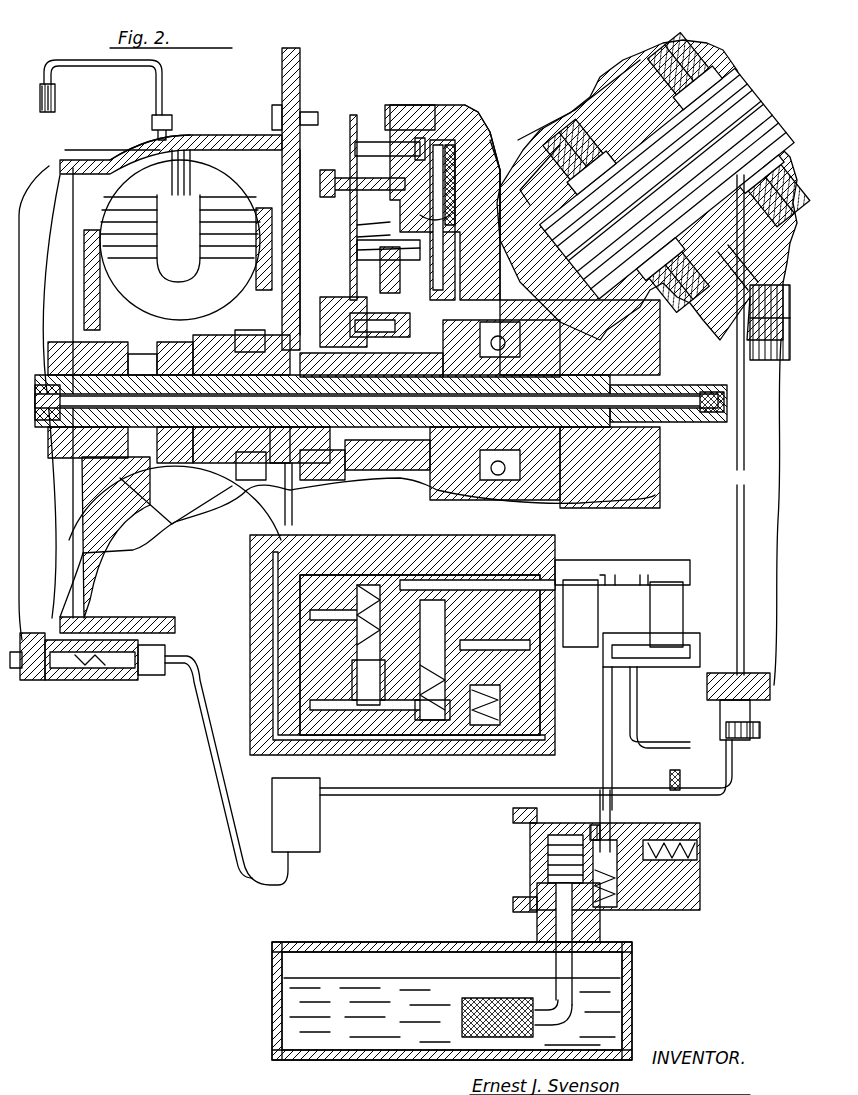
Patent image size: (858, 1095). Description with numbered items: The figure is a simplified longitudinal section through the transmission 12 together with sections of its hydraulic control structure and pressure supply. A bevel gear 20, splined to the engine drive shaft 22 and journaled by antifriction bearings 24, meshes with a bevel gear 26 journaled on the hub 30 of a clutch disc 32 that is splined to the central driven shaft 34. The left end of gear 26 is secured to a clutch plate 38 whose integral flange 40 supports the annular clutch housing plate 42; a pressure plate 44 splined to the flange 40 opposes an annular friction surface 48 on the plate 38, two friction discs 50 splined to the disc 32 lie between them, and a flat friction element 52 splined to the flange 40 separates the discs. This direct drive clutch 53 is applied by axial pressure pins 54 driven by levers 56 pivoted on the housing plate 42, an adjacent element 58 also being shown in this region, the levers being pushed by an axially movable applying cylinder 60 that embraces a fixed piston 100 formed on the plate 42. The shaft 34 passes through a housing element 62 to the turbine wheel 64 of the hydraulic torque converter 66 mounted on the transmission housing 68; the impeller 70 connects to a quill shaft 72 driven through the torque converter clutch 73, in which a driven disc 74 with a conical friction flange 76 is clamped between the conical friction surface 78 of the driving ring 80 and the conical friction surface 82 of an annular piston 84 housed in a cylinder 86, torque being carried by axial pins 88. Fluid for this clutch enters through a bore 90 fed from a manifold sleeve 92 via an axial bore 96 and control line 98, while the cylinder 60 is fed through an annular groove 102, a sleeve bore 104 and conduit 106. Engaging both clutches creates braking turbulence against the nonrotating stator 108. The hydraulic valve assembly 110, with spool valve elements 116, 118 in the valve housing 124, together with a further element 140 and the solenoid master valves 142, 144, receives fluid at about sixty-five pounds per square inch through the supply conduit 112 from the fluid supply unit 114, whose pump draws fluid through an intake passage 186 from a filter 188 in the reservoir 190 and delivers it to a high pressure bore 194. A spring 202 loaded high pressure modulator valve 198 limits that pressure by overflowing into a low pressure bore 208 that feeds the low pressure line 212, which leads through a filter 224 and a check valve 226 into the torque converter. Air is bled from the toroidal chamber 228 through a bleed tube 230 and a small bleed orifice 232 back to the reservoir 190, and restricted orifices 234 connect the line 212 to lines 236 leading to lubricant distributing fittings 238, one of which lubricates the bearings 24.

The transmission 12 is at (352, 71).
The bevel gear 20 is at (538, 132).
The drive shaft 22 is at (735, 100).
The antifriction bearings 24 is at (568, 110).
The bevel gear 26 is at (650, 353).
The hub 30 is at (520, 375).
The clutch disc 32 is at (478, 243).
The central driven shaft 34 is at (325, 396).
The clutch plate 38 is at (480, 228).
The circumferential flange 40 is at (418, 106).
The clutch housing plate 42 is at (372, 142).
The pressure plate 44 is at (438, 140).
The annular friction surface 48 is at (485, 140).
The annular friction discs 50 is at (435, 207).
The annular friction element 52 is at (448, 145).
The direct drive clutch 53 is at (480, 103).
The axial pressure pins 54 is at (352, 148).
The actuating lever 56 is at (350, 260).
The bolt 58 is at (340, 170).
The direct drive clutch applying cylinder 60 is at (328, 330).
The transmission housing element 62 is at (298, 165).
The turbine wheel 64 is at (120, 300).
The hydraulic torque converter 66 is at (114, 148).
The transmission housing 68 is at (282, 77).
The driving impeller 70 is at (236, 338).
The quill shaft 72 is at (251, 466).
The torque converter drive clutch 73 is at (490, 170).
The driven disc 74 is at (470, 271).
The peripheral friction flange 76 is at (356, 232).
The conical friction surface 78 is at (470, 257).
The annular driving ring 80 is at (356, 217).
The conical friction surface 82 is at (388, 242).
The clutch engaging piston 84 is at (380, 270).
The annular cylinder 86 is at (356, 247).
The axial pins 88 is at (382, 325).
The bore 90 is at (290, 345).
The manifold sleeve 92 is at (240, 360).
The axial bore 96 is at (275, 468).
The control fluid supply line 98 is at (306, 498).
The axially fixed piston 100 is at (300, 332).
The annular groove 102 is at (385, 480).
The axial sleeve bore 104 is at (335, 480).
The control fluid supply conduit 106 is at (295, 525).
The stator 108 is at (200, 158).
The hydraulic valve assembly 110 is at (382, 652).
The supply conduit 112 is at (612, 758).
The fluid supply unit 114 is at (733, 832).
The spool valve element 116 is at (360, 627).
The spool valve element 118 is at (440, 600).
The valve housing 124 is at (518, 755).
The solenoid 140 is at (570, 568).
The solenoid operated master valve 142 is at (590, 625).
The solenoid operated master valve 144 is at (684, 615).
The intake passage 186 is at (552, 930).
The fluid intake filter 188 is at (478, 998).
The fluid reservoir 190 is at (355, 1050).
The high pressure bore 194 is at (600, 828).
The high pressure modulator valve 198 is at (615, 818).
The spring 202 is at (635, 905).
The low pressure bore 208 is at (660, 838).
The low pressure line 212 is at (220, 786).
The filter 224 is at (320, 846).
The check valve 226 is at (118, 680).
The toroidal chamber 228 is at (86, 185).
The bleed tube 230 is at (160, 110).
The bleed orifice 232 is at (57, 105).
The restricted orifices 234 is at (660, 790).
The lines 236 is at (740, 750).
The lubricant distributing fitting 238 is at (774, 322).